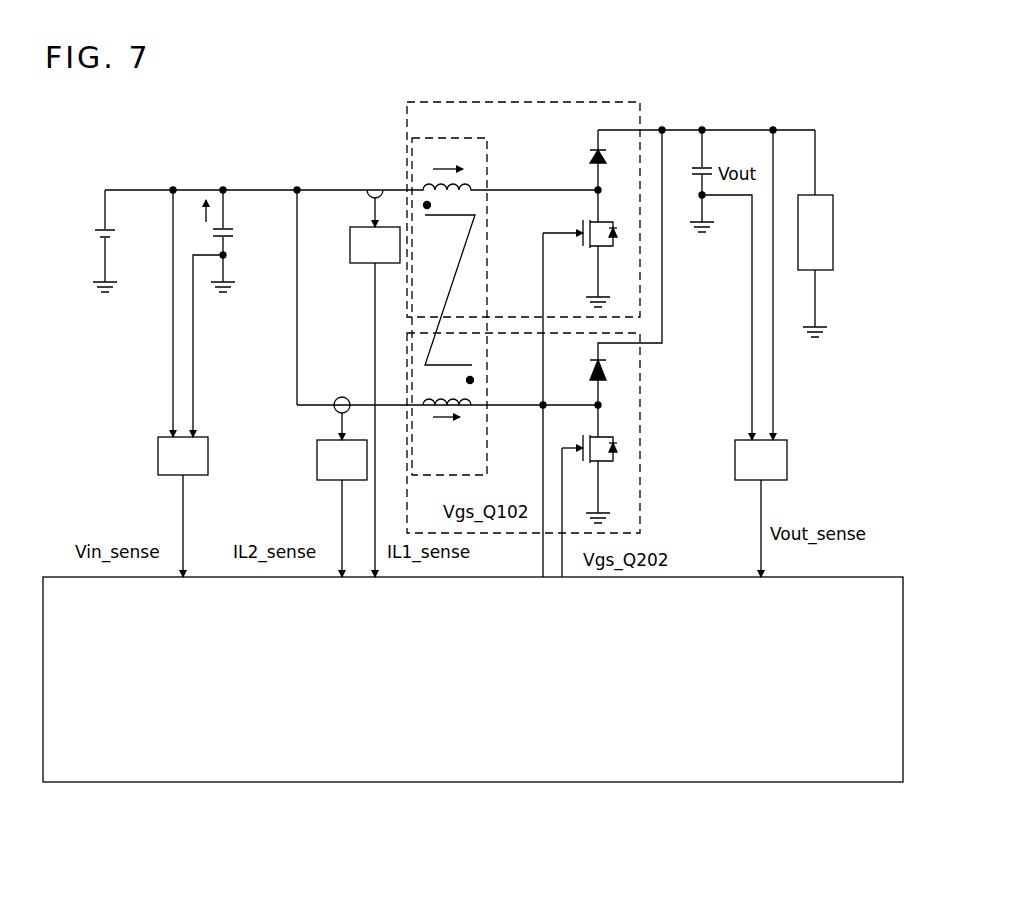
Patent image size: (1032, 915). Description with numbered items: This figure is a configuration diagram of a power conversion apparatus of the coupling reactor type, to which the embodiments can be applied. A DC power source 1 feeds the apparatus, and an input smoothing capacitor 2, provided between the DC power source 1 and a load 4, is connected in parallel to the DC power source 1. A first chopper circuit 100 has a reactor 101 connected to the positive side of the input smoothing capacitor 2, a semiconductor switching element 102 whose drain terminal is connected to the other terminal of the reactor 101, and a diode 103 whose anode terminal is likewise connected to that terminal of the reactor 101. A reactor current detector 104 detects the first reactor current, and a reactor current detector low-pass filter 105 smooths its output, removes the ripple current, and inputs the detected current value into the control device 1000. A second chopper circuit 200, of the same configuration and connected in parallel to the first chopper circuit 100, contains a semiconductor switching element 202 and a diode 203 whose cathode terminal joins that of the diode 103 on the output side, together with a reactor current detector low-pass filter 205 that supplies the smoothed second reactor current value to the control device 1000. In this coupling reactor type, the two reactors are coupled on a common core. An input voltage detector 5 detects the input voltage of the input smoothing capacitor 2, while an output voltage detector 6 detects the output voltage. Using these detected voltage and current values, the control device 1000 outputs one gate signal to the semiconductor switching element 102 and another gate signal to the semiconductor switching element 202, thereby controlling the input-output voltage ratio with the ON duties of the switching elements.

The DC power source 1 is at (94, 239).
The input smoothing capacitor 2 is at (234, 230).
The load 4 is at (833, 222).
The input voltage detector 5 is at (208, 440).
The output voltage detector 6 is at (787, 445).
The first chopper circuit 100 is at (640, 105).
The reactor 101 is at (487, 160).
The semiconductor switching element 102 is at (637, 245).
The diode 103 is at (598, 158).
The reactor current detector 104 is at (378, 194).
The reactor current detector low-pass filter 105 is at (340, 272).
The second chopper circuit 200 is at (640, 512).
The semiconductor switching element 202 is at (640, 418).
The diode 203 is at (640, 372).
The reactor current detector low-pass filter 205 is at (317, 470).
The control device 1000 is at (433, 782).